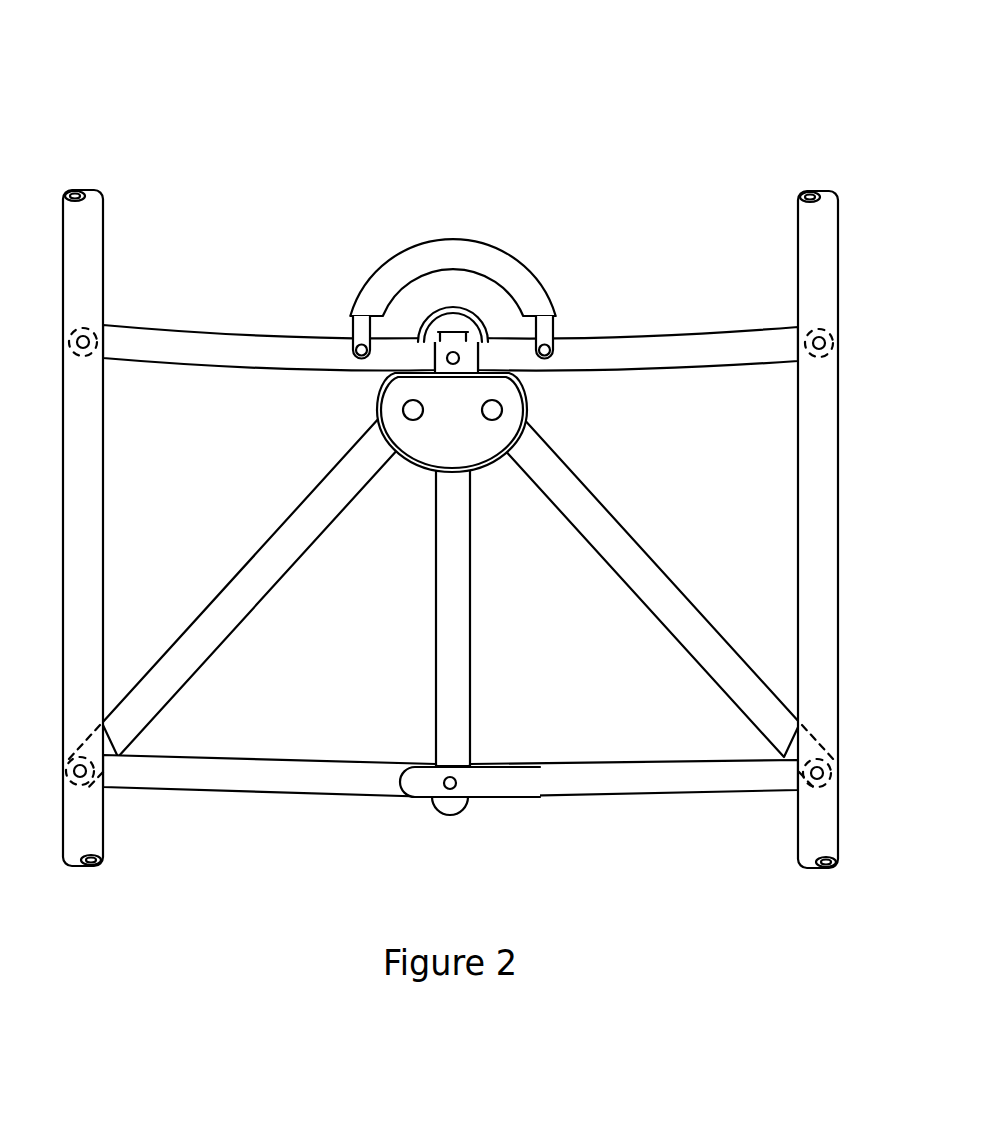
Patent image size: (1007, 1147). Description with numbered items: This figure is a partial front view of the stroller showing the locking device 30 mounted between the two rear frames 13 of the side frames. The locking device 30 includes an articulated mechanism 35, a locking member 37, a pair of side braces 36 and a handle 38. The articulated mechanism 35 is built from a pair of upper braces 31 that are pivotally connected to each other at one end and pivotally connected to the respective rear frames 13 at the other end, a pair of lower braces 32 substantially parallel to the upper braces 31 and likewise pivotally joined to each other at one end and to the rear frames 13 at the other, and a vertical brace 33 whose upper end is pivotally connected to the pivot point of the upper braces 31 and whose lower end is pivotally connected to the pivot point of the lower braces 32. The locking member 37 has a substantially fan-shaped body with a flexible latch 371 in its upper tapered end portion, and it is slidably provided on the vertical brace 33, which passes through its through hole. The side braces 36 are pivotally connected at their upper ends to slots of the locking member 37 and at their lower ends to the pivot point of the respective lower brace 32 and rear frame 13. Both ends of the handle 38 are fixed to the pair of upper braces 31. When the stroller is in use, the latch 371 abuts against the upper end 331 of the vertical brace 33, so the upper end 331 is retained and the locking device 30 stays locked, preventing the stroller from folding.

The locking device 30 is at (662, 132).
The rear frame 13 is at (88, 472).
The upper brace 31 is at (225, 328).
The lower brace 32 is at (245, 778).
The vertical brace 33 is at (458, 597).
The upper end of the vertical brace 331 is at (435, 338).
The articulated mechanism 35 is at (305, 798).
The side brace 36 is at (247, 580).
The locking member 37 is at (545, 412).
The flexible latch 371 is at (460, 332).
The handle 38 is at (458, 247).